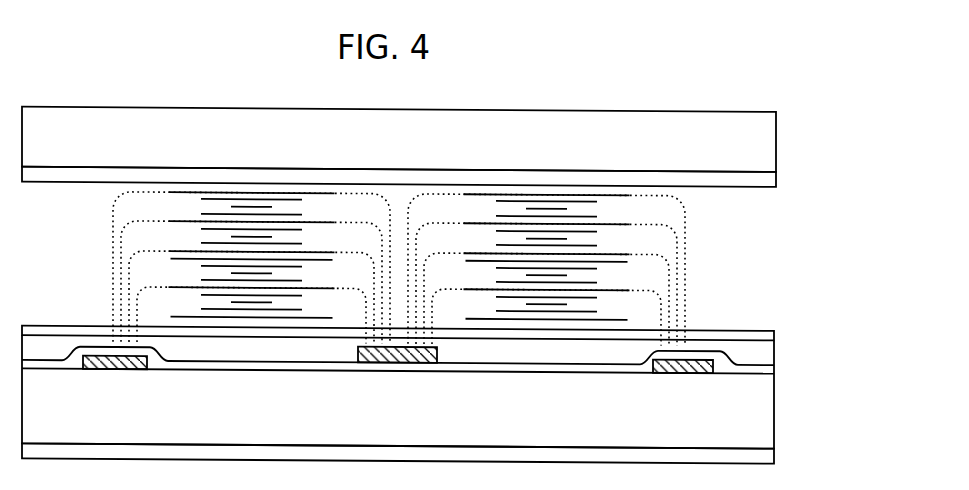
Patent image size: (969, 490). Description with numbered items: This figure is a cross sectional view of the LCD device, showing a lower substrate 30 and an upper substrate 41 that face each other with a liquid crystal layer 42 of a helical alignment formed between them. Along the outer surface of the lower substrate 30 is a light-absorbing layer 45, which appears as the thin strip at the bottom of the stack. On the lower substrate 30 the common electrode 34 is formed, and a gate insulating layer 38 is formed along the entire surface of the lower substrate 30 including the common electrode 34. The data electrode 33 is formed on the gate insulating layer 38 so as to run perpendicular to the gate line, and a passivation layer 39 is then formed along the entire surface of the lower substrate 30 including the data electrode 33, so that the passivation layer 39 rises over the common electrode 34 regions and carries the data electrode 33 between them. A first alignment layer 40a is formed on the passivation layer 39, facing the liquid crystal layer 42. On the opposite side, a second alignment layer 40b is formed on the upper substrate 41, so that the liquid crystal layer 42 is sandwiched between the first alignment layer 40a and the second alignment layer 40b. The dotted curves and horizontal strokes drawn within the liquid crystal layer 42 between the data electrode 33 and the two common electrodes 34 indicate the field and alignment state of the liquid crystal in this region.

The lower substrate 30 is at (767, 412).
The data electrode 33 is at (398, 360).
The common electrode 34 is at (685, 370).
The gate insulating layer 38 is at (767, 365).
The passivation layer 39 is at (767, 345).
The first alignment layer 40a is at (767, 324).
The second alignment layer 40b is at (768, 174).
The upper substrate 41 is at (768, 138).
The liquid crystal layer 42 is at (770, 250).
The light-absorbing layer 45 is at (767, 454).